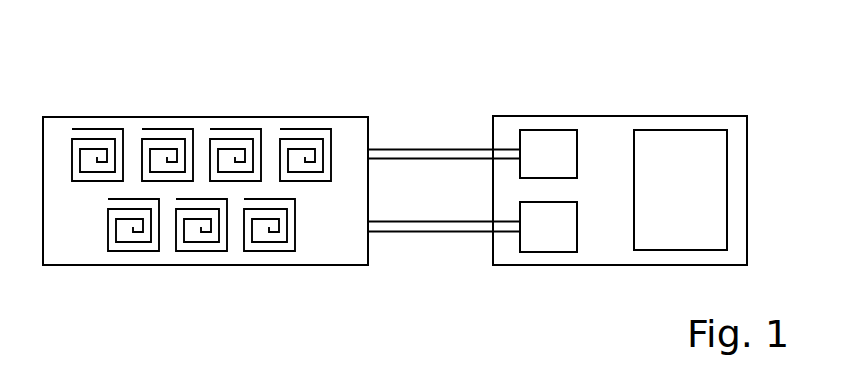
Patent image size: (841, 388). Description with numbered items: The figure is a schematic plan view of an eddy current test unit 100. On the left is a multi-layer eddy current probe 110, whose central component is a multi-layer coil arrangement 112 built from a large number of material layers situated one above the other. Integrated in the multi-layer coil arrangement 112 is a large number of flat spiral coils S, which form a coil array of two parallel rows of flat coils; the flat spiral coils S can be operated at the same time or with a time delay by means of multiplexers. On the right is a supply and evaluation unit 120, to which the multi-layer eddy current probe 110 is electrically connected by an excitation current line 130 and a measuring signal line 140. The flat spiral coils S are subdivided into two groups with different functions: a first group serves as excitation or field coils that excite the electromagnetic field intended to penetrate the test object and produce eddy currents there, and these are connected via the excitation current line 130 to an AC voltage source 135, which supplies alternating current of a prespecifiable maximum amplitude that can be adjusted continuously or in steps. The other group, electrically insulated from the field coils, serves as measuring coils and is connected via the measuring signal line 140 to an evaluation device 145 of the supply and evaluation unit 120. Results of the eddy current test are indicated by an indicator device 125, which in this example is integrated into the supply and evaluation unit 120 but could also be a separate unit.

The eddy current test unit 100 is at (557, 81).
The multi-layer eddy current probe 110 is at (157, 76).
The multi-layer coil arrangement 112 is at (68, 248).
The flat spiral coils S is at (101, 129).
The supply and evaluation unit 120 is at (612, 243).
The indicator device 125 is at (705, 202).
The excitation current line 130 is at (425, 225).
The AC voltage source 135 is at (571, 239).
The measuring signal line 140 is at (425, 155).
The evaluation device 145 is at (571, 167).